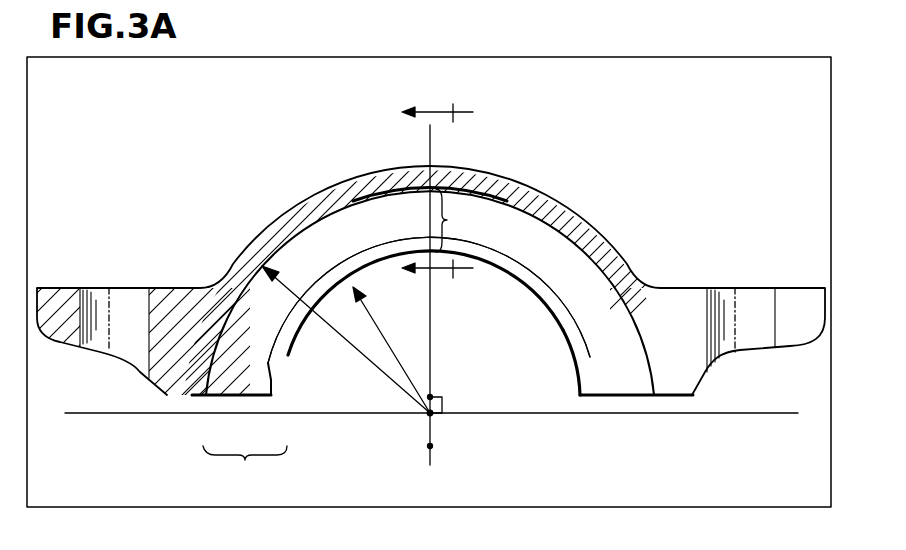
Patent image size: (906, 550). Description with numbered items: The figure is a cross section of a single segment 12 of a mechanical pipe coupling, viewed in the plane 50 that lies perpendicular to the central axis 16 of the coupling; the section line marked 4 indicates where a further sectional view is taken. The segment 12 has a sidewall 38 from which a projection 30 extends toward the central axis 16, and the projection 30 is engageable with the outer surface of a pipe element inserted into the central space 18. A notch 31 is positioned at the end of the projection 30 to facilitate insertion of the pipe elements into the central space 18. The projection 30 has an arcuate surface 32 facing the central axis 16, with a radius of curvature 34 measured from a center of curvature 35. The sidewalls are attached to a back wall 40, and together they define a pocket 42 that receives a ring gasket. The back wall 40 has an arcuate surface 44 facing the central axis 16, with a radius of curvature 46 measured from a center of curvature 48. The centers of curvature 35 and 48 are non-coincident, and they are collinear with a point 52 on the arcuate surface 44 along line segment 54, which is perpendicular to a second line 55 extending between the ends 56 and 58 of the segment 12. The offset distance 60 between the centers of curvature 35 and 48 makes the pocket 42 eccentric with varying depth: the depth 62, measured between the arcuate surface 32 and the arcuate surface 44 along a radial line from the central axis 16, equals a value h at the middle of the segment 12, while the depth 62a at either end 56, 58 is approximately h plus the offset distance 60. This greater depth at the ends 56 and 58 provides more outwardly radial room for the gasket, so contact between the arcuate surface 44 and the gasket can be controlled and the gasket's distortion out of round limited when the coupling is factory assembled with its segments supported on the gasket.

The plane 50 is at (808, 98).
The segment 12 is at (497, 166).
The back wall 40 is at (383, 168).
The pocket 42 is at (327, 232).
The sidewall 38 is at (552, 253).
The arcuate surface of the back wall 44 is at (540, 217).
The point on the back wall's arcuate surface 52 is at (455, 176).
The depth of the pocket 62 is at (460, 220).
The depth at the segment end 62a is at (245, 468).
The central space 18 is at (480, 334).
The arcuate surface of the projection 32 is at (548, 328).
The line segment 54 is at (432, 308).
The projection 30 is at (560, 360).
The notch 31 is at (283, 376).
The end of the segment 56 is at (233, 383).
The end of the segment 58 is at (625, 380).
The second line 55 is at (98, 414).
The central axis 16 is at (429, 446).
The center of curvature of the back wall arcuate surface 48 is at (429, 413).
The center of curvature of the arcuate surface 35 is at (432, 397).
The offset distance 60 is at (446, 412).
The radius of curvature 46 is at (360, 350).
The radius of curvature 34 is at (395, 348).
The section line 4- 4 is at (445, 191).